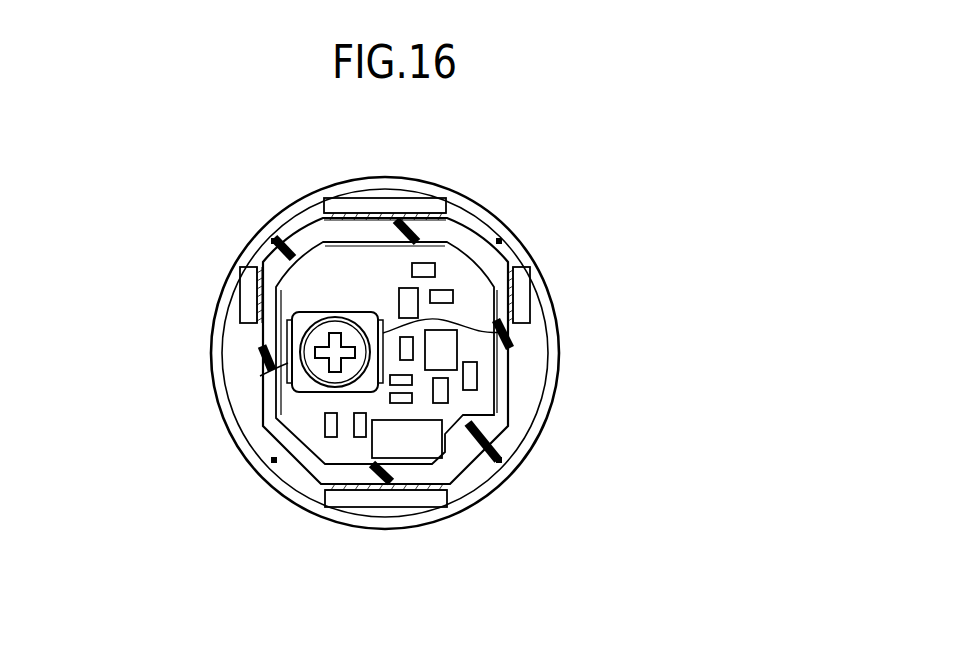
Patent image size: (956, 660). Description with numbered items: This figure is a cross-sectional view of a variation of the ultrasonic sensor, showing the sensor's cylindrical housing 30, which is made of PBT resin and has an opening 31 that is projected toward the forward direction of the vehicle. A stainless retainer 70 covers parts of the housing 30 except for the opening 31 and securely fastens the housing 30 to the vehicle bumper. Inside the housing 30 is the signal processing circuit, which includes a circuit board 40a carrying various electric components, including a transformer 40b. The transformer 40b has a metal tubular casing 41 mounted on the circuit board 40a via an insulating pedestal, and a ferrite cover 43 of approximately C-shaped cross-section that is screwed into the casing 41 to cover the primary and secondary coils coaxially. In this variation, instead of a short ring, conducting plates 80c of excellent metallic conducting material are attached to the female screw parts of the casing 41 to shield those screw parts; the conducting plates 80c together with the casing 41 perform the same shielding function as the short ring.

The cylindrical housing 30 is at (479, 198).
The opening 31 is at (560, 373).
The circuit board 40a is at (468, 295).
The transformer 40b is at (321, 303).
The tubular casing 41 is at (363, 325).
The ferrite cover 43 is at (320, 369).
The retainer 70 is at (376, 207).
The conducting plates 80c is at (500, 332).